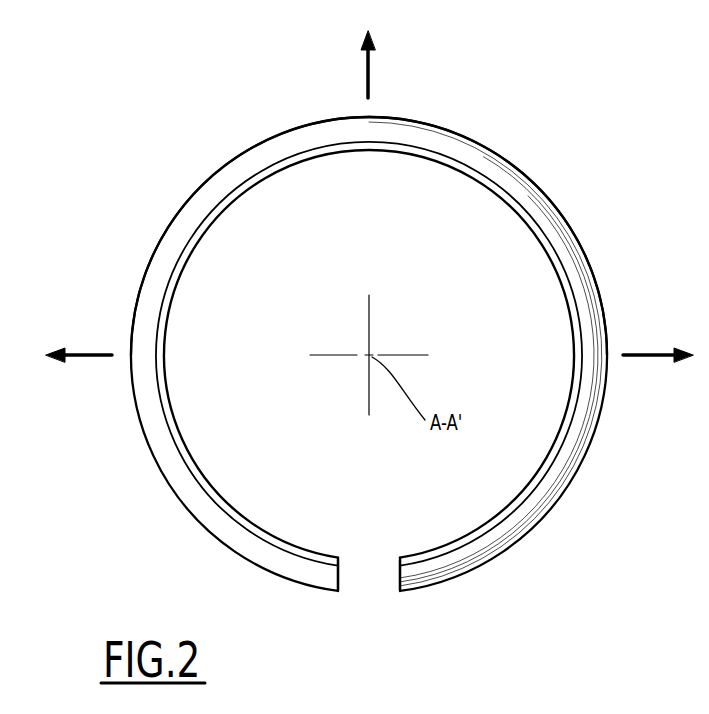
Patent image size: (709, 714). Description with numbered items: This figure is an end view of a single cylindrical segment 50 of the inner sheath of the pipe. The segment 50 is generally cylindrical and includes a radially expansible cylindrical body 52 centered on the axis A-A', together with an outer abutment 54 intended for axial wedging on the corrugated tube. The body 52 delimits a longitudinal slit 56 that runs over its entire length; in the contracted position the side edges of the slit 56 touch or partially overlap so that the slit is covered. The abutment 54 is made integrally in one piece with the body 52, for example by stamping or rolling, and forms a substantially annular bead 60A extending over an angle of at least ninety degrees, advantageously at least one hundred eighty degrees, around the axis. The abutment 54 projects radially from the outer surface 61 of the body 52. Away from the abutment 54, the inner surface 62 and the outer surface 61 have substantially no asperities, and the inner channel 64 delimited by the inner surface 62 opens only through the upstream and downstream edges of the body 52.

The segment 50 is at (508, 578).
The cylindrical body 52 is at (215, 490).
The outer abutment 54 is at (506, 139).
The longitudinal slit 56 is at (368, 585).
The annular bead 60A is at (198, 185).
The outer surface 61 is at (567, 272).
The inner surface 62 is at (523, 217).
The inner channel 64 is at (530, 442).